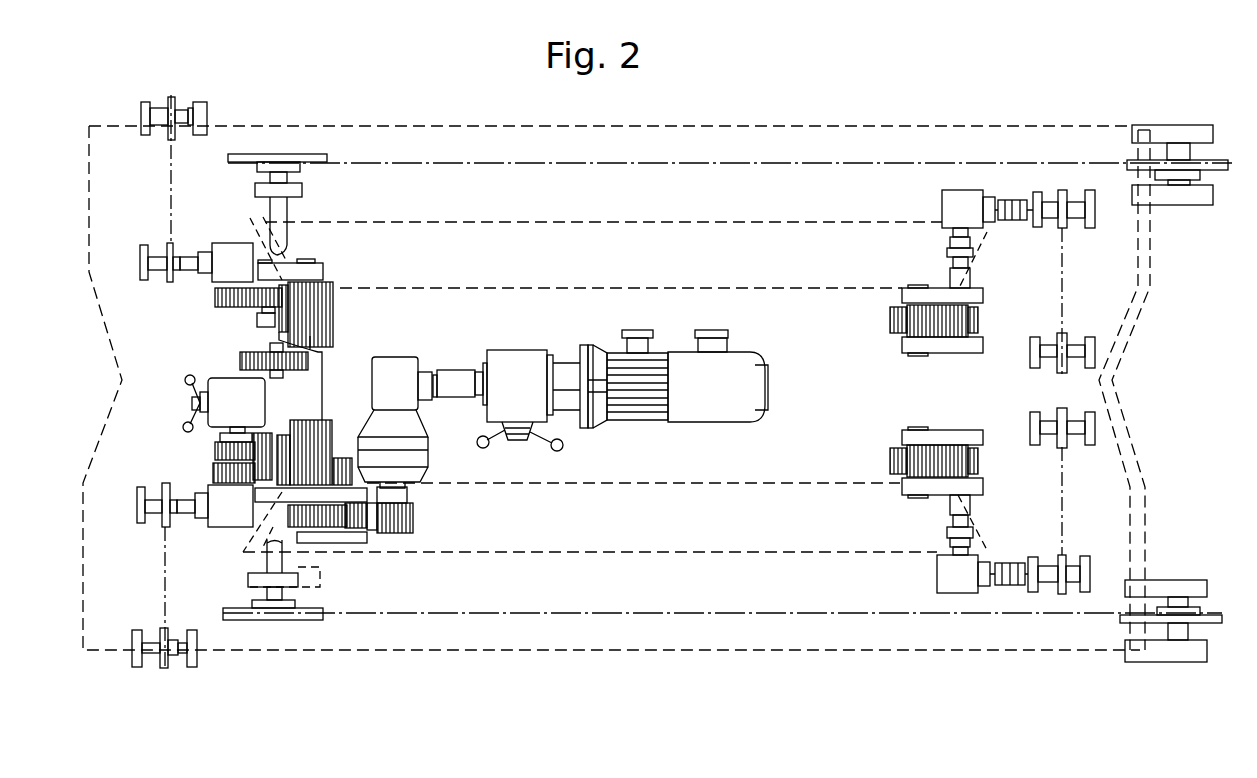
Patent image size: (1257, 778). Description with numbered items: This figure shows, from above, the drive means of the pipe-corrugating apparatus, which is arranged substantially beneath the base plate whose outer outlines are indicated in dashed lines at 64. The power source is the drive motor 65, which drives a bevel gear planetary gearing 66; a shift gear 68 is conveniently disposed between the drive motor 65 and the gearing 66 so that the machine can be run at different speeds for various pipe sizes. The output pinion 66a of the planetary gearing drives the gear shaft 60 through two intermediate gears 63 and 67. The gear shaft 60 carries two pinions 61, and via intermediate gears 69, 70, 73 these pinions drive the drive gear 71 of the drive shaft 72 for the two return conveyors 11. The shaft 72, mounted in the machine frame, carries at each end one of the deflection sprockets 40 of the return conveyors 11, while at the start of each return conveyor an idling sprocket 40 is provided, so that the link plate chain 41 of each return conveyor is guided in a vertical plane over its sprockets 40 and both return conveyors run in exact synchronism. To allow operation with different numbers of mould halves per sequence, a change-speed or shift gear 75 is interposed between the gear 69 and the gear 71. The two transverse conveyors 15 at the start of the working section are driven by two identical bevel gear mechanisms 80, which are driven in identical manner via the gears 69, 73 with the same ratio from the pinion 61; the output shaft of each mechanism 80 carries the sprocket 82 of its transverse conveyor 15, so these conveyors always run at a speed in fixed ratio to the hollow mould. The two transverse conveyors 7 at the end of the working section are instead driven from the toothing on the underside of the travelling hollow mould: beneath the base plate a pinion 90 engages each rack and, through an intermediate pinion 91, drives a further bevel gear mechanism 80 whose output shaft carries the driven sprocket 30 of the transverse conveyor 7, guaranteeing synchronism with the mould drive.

The outer outlines of the base plate 64 is at (89, 205).
The return conveyor 11 is at (697, 158).
The link plate chain 41 is at (600, 617).
The transverse conveyor 15 is at (170, 178).
The transverse conveyor 7 is at (1063, 262).
The sprocket 40 is at (300, 156).
The sprocket 30 is at (1065, 188).
The bevel gear mechanism 80 is at (232, 254).
The sprocket 82 is at (170, 284).
The drive shaft 72 is at (284, 246).
The pinion 61 is at (333, 316).
The gear shaft 60 is at (323, 378).
The drive gear 71 is at (282, 360).
The change-speed or shift gear 75 is at (218, 387).
The intermediate gear 70 is at (215, 452).
The intermediate gear 73 is at (215, 458).
The intermediate gear 69 is at (216, 474).
The intermediate gear 67 is at (345, 458).
The intermediate gear 63 is at (355, 530).
The output pinion 66a is at (413, 517).
The bevel gear planetary gearing 66 is at (402, 372).
The shift gear 68 is at (525, 372).
The drive motor 65 is at (635, 414).
The pinion 90 is at (892, 322).
The intermediate pinion 91 is at (975, 322).